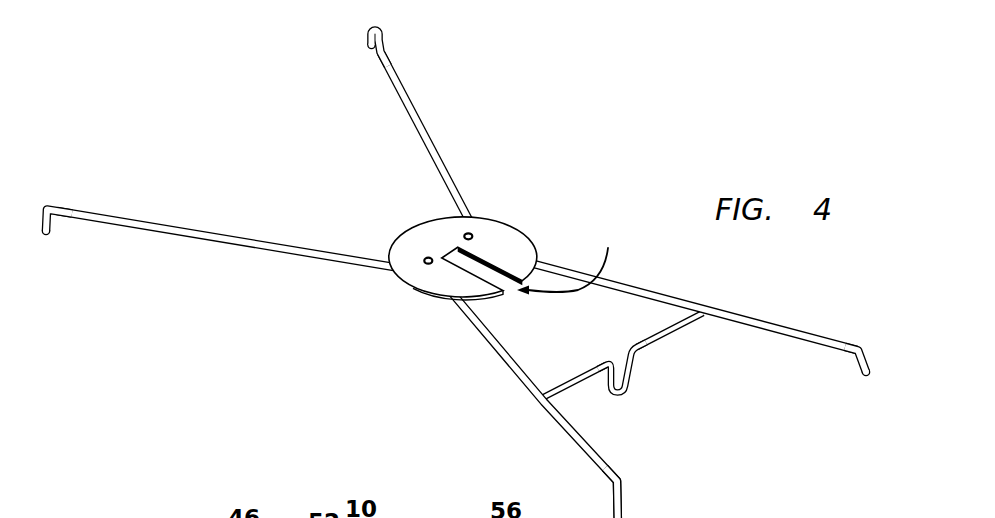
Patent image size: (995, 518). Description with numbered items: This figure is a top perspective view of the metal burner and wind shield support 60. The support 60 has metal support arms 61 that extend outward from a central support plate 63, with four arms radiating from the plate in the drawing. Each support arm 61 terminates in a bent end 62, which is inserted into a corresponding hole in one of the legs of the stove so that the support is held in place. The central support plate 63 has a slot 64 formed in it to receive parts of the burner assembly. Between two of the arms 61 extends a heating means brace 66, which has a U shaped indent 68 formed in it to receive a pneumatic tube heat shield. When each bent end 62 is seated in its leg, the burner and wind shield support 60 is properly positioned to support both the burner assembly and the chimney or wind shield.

The burner and wind shield support 60 is at (467, 275).
The support arm 61 is at (436, 142).
The bent end 62 is at (368, 44).
The support plate 63 is at (415, 289).
The slot 64 is at (574, 260).
The heating means brace 66 is at (591, 372).
The U shaped indent 68 is at (640, 366).